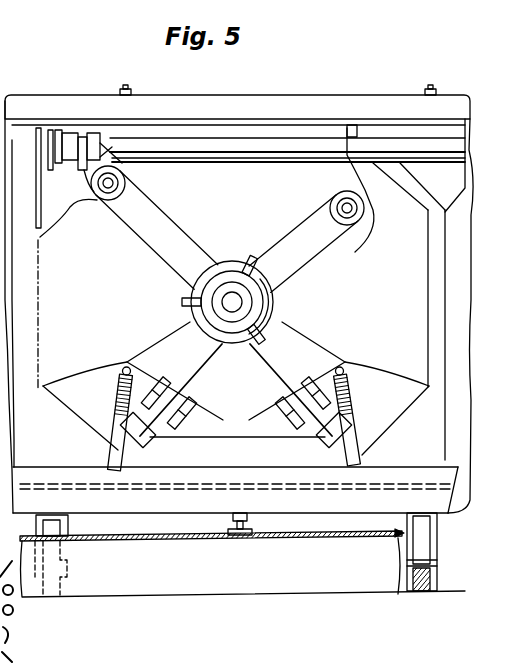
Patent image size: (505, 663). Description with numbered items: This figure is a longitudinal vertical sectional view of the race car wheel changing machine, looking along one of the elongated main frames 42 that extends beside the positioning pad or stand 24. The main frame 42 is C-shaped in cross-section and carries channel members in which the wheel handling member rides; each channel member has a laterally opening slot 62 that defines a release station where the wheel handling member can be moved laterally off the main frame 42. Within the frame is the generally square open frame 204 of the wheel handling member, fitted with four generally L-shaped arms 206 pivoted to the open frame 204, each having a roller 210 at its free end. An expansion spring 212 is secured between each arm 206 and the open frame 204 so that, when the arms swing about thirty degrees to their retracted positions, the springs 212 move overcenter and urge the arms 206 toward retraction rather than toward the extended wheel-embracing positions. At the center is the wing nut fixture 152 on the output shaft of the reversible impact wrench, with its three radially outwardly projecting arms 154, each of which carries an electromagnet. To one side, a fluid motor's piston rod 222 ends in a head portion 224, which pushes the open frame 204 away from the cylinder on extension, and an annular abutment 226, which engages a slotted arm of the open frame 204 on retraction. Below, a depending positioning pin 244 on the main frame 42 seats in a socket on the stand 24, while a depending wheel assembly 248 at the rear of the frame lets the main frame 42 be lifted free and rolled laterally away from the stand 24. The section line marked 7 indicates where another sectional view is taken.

The main frame 42 is at (380, 93).
The laterally opening slot 62 is at (367, 163).
The piston rod 222 is at (72, 147).
The head portion 224 is at (55, 137).
The annular abutment 226 is at (88, 135).
The wing nut fixture 152 is at (263, 279).
The radially outwardly projecting arm 154 is at (250, 260).
The section line 7- 7 is at (187, 187).
The open frame 204 is at (92, 382).
The L-shaped arm 206 is at (346, 392).
The roller 210 is at (292, 432).
The expansion spring 212 is at (117, 412).
The positioning pad or stand 24 is at (327, 537).
The depending positioning pin 244 is at (240, 538).
The depending wheel assembly 248 is at (63, 562).